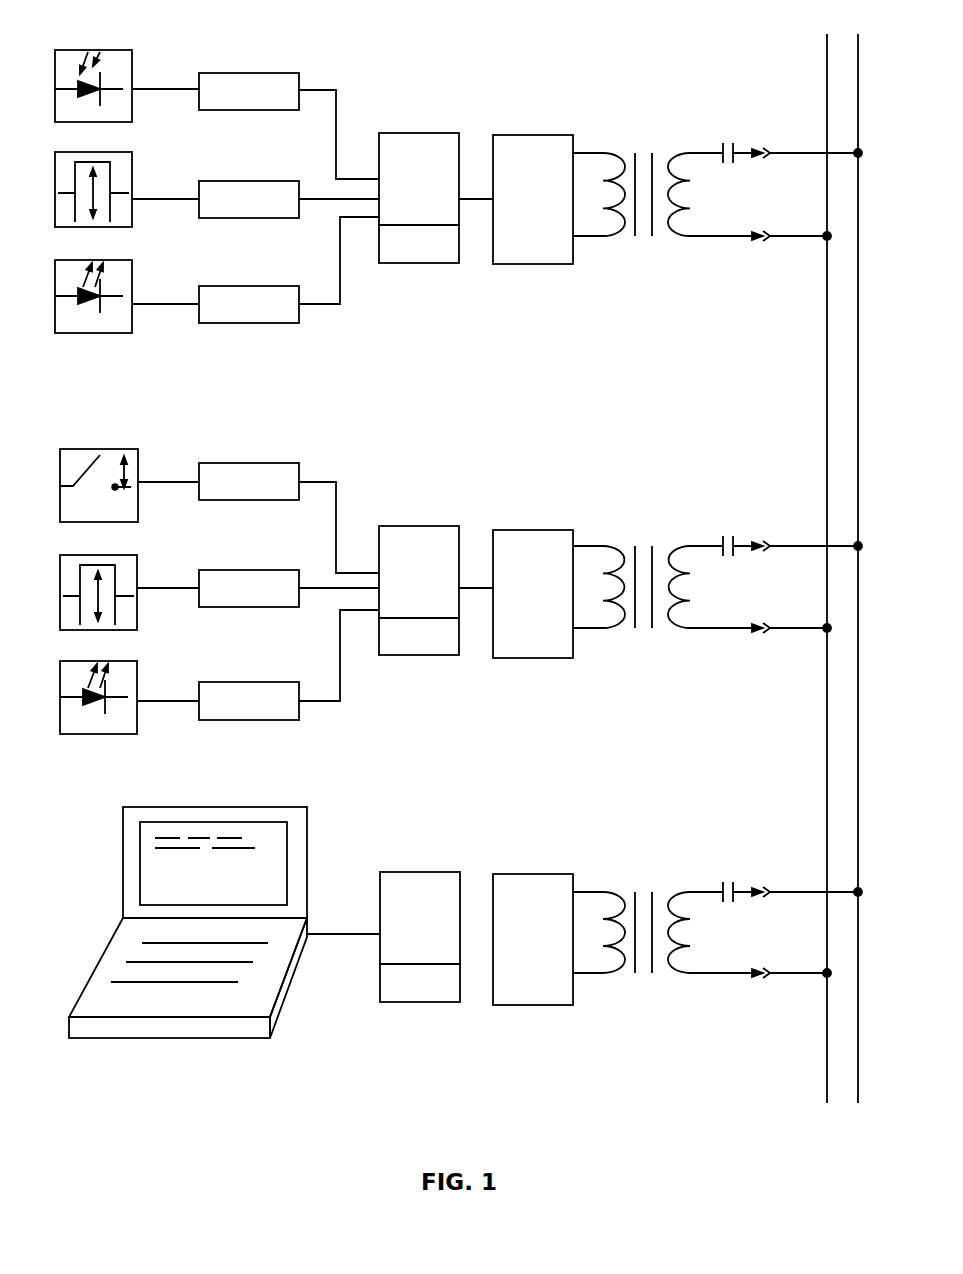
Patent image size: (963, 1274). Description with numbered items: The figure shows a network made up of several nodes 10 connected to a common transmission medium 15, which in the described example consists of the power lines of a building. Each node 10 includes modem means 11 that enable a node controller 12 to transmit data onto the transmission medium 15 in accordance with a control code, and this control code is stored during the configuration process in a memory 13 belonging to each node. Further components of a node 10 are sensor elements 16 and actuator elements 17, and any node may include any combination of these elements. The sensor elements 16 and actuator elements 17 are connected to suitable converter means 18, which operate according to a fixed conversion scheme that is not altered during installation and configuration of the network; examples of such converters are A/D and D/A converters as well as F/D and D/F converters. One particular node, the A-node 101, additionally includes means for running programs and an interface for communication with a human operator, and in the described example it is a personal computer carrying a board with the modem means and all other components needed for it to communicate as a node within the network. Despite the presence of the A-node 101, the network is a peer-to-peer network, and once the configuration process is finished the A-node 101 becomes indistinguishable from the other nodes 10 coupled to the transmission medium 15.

The node 10 is at (580, 449).
The modem means 11 is at (677, 396).
The node controller 12 is at (407, 132).
The memory 13 is at (407, 263).
The transmission medium 15 is at (827, 387).
The sensor elements 16 is at (70, 50).
The actuator elements 17 is at (82, 333).
The converter means 18 is at (215, 396).
The A-node 101 is at (418, 1047).